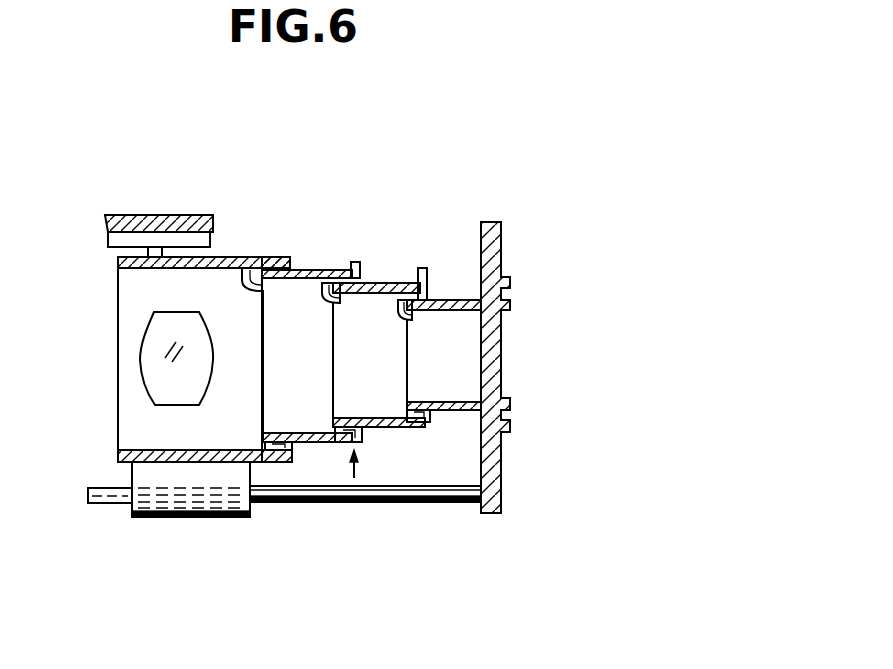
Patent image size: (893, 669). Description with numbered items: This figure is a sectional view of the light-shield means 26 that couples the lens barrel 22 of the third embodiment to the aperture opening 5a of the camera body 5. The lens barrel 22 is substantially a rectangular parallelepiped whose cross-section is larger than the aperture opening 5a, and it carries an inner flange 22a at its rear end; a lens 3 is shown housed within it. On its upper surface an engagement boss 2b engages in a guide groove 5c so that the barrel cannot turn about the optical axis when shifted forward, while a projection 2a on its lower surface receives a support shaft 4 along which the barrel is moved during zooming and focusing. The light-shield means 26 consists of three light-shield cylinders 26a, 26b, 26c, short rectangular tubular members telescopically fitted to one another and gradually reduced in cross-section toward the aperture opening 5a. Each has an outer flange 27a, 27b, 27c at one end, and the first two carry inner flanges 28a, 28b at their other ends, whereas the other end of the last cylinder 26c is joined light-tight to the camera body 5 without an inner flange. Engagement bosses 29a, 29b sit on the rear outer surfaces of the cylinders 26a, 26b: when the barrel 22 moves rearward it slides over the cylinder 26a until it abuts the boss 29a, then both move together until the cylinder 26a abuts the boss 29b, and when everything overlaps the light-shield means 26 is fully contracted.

The projection 2a is at (212, 505).
The engagement boss 2b is at (186, 232).
The lens 3 is at (143, 360).
The support shaft 4 is at (110, 503).
The camera body 5 is at (503, 480).
The aperture opening 5a is at (503, 336).
The guide groove 5c is at (131, 230).
The lens barrel 22 is at (246, 260).
The inner flange 22a is at (286, 272).
The light-shield means 26 is at (357, 500).
The light-shield cylinder 26a is at (305, 445).
The light-shield cylinder 26b is at (402, 424).
The light-shield cylinder 26c is at (452, 410).
The outer flange 27a is at (252, 280).
The outer flange 27b is at (331, 290).
The outer flange 27c is at (406, 300).
The inner flange 28a is at (380, 283).
The inner flange 28b is at (447, 300).
The engagement boss 29a is at (356, 262).
The engagement boss 29b is at (423, 268).